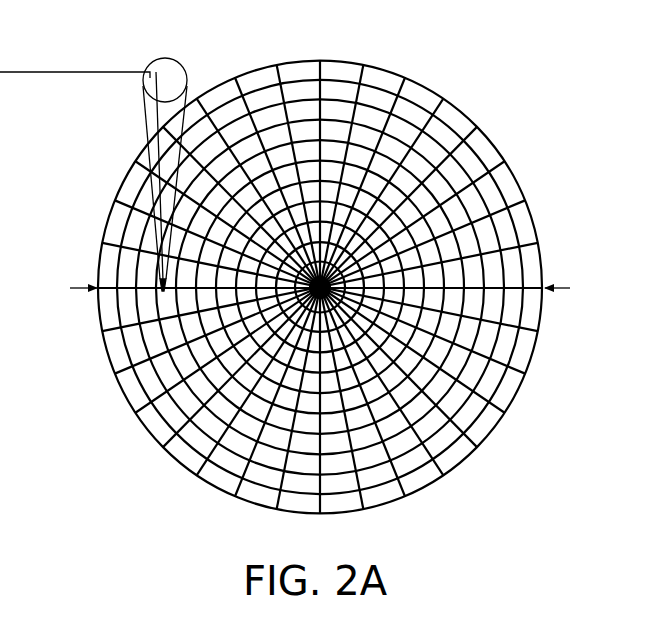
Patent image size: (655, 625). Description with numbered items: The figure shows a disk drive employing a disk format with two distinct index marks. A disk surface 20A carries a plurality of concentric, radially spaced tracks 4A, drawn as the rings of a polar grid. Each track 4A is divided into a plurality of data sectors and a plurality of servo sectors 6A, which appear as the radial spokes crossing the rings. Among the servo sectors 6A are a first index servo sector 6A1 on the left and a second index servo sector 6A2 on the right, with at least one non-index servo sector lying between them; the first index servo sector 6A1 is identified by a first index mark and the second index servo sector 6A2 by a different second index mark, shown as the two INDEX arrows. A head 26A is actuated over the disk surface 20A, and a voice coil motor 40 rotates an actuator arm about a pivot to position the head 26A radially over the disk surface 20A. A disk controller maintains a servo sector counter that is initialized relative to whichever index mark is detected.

The disk surface 20A is at (319, 264).
The tracks 4A is at (376, 99).
The servo sectors 6A is at (322, 58).
The first index servo sector 6A1 is at (103, 285).
The second index servo sector 6A2 is at (532, 285).
The voice coil motor 40 is at (165, 57).
The head 26A is at (159, 296).